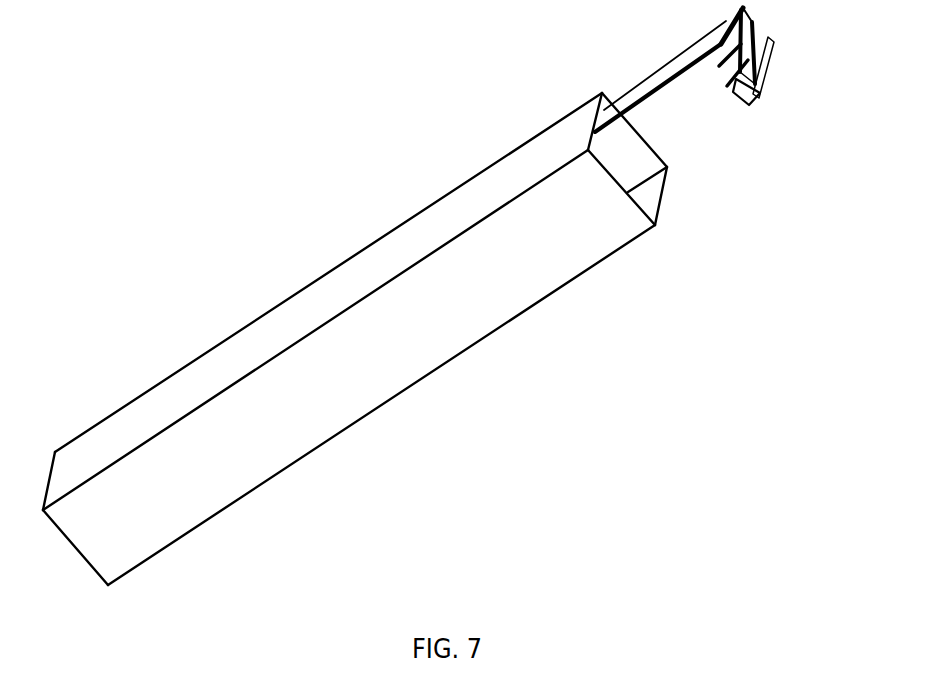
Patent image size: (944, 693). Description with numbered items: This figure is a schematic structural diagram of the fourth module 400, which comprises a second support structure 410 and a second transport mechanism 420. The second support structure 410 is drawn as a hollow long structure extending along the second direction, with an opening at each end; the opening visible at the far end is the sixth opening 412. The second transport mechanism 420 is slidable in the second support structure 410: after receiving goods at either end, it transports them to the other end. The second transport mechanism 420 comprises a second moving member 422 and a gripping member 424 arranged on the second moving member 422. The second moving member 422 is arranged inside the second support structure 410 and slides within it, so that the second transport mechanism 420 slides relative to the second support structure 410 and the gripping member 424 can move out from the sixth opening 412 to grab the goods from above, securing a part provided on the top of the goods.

The fourth module 400 is at (357, 70).
The second support structure 410 is at (338, 436).
The sixth opening 412 is at (664, 206).
The second transport mechanism 420 is at (847, 159).
The second moving member 422 is at (677, 76).
The gripping member 424 is at (771, 60).